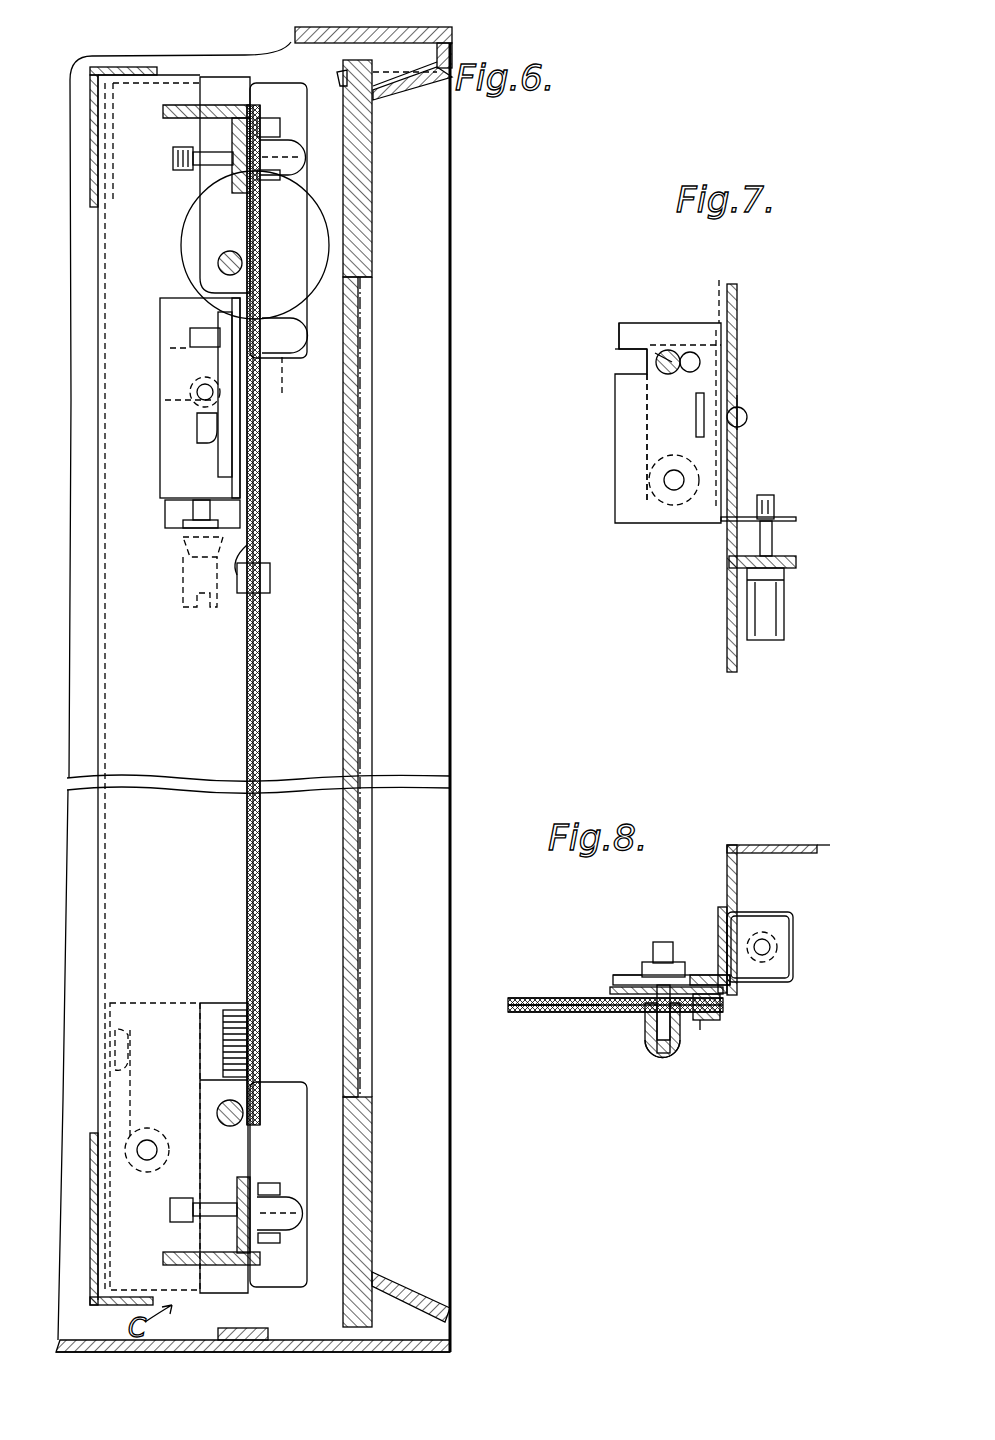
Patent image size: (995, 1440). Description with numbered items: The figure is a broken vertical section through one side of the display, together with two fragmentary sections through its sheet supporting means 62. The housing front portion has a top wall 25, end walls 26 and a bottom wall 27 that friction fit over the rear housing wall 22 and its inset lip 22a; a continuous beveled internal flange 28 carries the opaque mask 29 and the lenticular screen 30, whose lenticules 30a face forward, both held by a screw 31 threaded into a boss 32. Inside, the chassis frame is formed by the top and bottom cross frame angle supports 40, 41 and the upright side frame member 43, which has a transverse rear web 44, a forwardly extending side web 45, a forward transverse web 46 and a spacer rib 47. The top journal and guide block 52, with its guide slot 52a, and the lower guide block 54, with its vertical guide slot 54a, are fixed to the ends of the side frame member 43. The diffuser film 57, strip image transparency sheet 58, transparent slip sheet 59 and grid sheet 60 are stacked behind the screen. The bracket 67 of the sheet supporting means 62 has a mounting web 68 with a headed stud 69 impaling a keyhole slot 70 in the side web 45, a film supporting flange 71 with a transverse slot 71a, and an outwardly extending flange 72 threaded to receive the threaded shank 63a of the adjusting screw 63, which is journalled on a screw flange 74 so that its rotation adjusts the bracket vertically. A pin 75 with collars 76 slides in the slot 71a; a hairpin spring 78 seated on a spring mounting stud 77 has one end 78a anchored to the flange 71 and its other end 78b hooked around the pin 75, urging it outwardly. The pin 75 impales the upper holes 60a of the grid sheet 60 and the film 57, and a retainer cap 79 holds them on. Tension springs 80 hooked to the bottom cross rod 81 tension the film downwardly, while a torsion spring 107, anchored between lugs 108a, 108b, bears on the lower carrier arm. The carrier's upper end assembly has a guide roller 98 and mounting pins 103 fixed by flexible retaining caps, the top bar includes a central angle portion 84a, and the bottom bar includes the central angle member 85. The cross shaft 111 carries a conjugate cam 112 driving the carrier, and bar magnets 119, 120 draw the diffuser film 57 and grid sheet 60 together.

In FIG. 6, the rear housing wall 22 is at (165, 1352).
In FIG. 6, the inset lip 22a is at (250, 1328).
In FIG. 6, the top wall 25 is at (432, 38).
In FIG. 6, the end wall 26 is at (355, 495).
In FIG. 6, the bottom wall 27 is at (345, 1350).
In FIG. 6, the internal flange 28 is at (420, 72).
In FIG. 6, the opaque mask 29 is at (372, 175).
In FIG. 6, the lenticular screen 30 is at (343, 450).
In FIG. 6, the screen lenticules 30a is at (365, 320).
In FIG. 6, the screw 31 is at (340, 72).
In FIG. 6, the boss 32 is at (398, 90).
In FIG. 6, the top cross frame angle support 40 is at (108, 64).
In FIG. 6, the bottom cross frame angle support 41 is at (105, 1310).
In FIG. 8, the side frame member 43 is at (817, 853).
In FIG. 8, the transverse rear web 44 is at (775, 845).
In FIG. 7, the side web 45 is at (737, 300).
In FIG. 8, the side web 45 is at (727, 870).
In FIG. 8, the forward transverse web 46 is at (612, 990).
In FIG. 8, the spacer rib 47 is at (720, 1005).
In FIG. 6, the top journal and guide block 52 is at (265, 83).
In FIG. 6, the guide slot 52a is at (245, 75).
In FIG. 6, the lower guide block 54 is at (293, 1082).
In FIG. 6, the vertical guide slot 54a is at (185, 1323).
In FIG. 6, the diffuser film 57 is at (247, 758).
In FIG. 8, the diffuser film 57 is at (512, 998).
In FIG. 6, the strip image transparency sheet 58 is at (247, 723).
In FIG. 8, the strip image transparency sheet 58 is at (510, 998).
In FIG. 6, the transparent slip sheet 59 is at (260, 703).
In FIG. 8, the transparent slip sheet 59 is at (510, 1012).
In FIG. 6, the grid sheet 60 is at (260, 680).
In FIG. 8, the grid sheet 60 is at (540, 1012).
In FIG. 8, the upper holes 60a is at (712, 1020).
In FIG. 7, the sheet supporting means 62 is at (612, 308).
In FIG. 8, the sheet supporting means 62 is at (816, 990).
In FIG. 6, the adjusting screw 63 is at (183, 590).
In FIG. 7, the adjusting screw 63 is at (780, 615).
In FIG. 7, the threaded shank 63a is at (766, 495).
In FIG. 8, the threaded shank 63a is at (770, 947).
In FIG. 6, the bracket 67 is at (160, 438).
In FIG. 8, the bracket 67 is at (625, 975).
In FIG. 6, the latch plate 68 is at (160, 397).
In FIG. 7, the latch plate 68 is at (702, 289).
In FIG. 7, the headed stud 69 is at (747, 417).
In FIG. 7, the keyhole slot 70 is at (737, 398).
In FIG. 7, the film supporting flange 71 is at (620, 523).
In FIG. 8, the film supporting flange 71 is at (708, 970).
In FIG. 7, the transverse slot 71a is at (618, 358).
In FIG. 8, the transverse slot 71a is at (625, 975).
In FIG. 6, the outwardly extending flange 72 is at (165, 510).
In FIG. 7, the outwardly extending flange 72 is at (796, 520).
In FIG. 8, the outwardly extending flange 72 is at (780, 930).
In FIG. 6, the screw flange 74 is at (183, 540).
In FIG. 7, the screw flange 74 is at (796, 562).
In FIG. 6, the pin 75 is at (293, 391).
In FIG. 7, the pin 75 is at (655, 370).
In FIG. 8, the pin 75 is at (648, 1040).
In FIG. 7, the collar 76 is at (684, 355).
In FIG. 8, the collar 76 is at (650, 1000).
In FIG. 6, the spring mounting stud 77 is at (197, 430).
In FIG. 7, the spring mounting stud 77 is at (664, 480).
In FIG. 6, the hairpin spring 78 is at (190, 337).
In FIG. 7, the hairpin spring 78 is at (647, 428).
In FIG. 7, the spring end 78a is at (705, 395).
In FIG. 7, the spring end 78b is at (660, 350).
In FIG. 6, the retainer cap 79 is at (300, 340).
In FIG. 8, the retainer cap 79 is at (662, 1058).
In FIG. 6, the tension spring 80 is at (223, 1015).
In FIG. 6, the bottom cross rod 81 is at (218, 1113).
In FIG. 6, the slide body 84a is at (232, 196).
In FIG. 6, the central angle member 85 is at (163, 1258).
In FIG. 6, the guide roller 98 is at (265, 138).
In FIG. 6, the upper mounting pin 103 is at (285, 180).
In FIG. 6, the torsion spring 107 is at (125, 1060).
In FIG. 6, the anchoring lug 108a is at (179, 1118).
In FIG. 6, the anchoring lug 108b is at (158, 1045).
In FIG. 6, the cross shaft 111 is at (222, 258).
In FIG. 6, the conjugate cam 112 is at (318, 247).
In FIG. 6, the bar magnet 119 is at (250, 555).
In FIG. 6, the bar magnet 120 is at (270, 578).